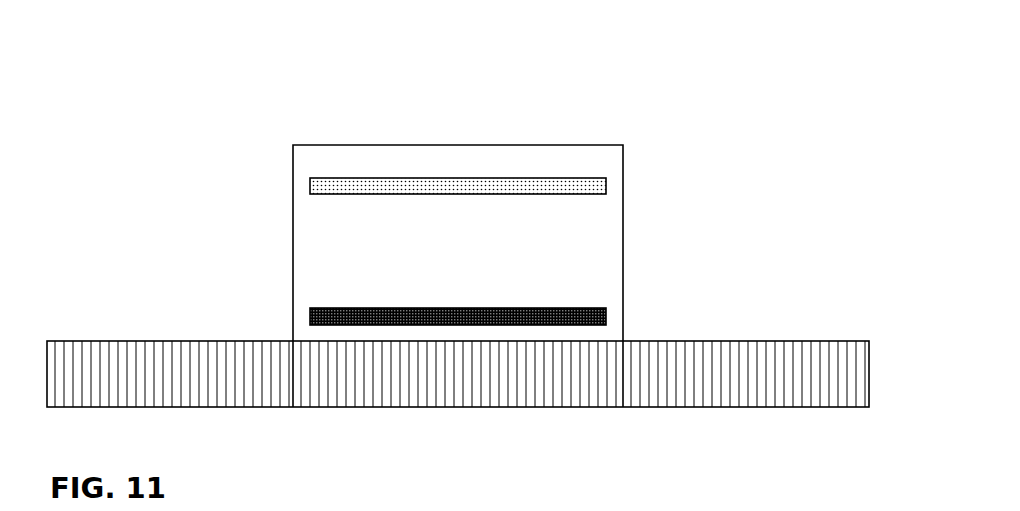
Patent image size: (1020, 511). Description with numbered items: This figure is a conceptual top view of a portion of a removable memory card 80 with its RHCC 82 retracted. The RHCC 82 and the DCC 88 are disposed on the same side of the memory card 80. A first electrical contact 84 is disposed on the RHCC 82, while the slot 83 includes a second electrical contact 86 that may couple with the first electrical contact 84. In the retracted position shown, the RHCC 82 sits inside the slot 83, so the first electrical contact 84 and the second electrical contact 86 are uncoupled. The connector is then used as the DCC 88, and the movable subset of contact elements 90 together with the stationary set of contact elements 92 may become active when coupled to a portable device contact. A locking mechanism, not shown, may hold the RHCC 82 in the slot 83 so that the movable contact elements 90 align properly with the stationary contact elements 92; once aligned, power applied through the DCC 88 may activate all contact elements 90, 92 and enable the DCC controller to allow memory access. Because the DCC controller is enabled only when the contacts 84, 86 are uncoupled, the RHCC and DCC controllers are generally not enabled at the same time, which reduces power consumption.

The removable memory card 80 is at (123, 103).
The RHCC 82 is at (470, 288).
The slot 83 is at (388, 138).
The first electrical contact 84 is at (573, 177).
The second electrical contact 86 is at (572, 308).
The DCC 88 is at (142, 341).
The movable subset of contact elements 90 is at (418, 392).
The stationary set of contact elements 92 is at (703, 393).